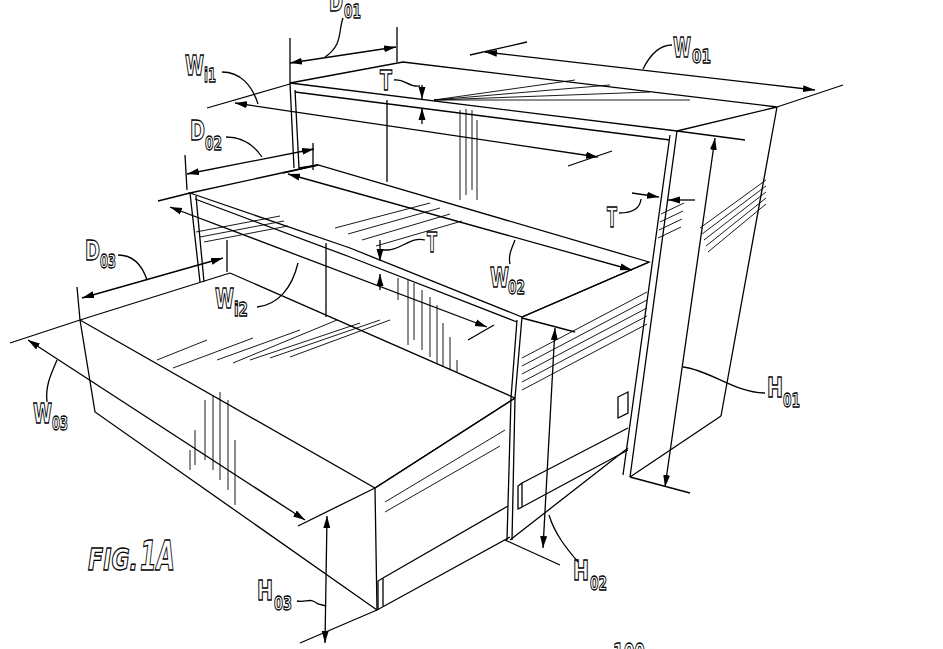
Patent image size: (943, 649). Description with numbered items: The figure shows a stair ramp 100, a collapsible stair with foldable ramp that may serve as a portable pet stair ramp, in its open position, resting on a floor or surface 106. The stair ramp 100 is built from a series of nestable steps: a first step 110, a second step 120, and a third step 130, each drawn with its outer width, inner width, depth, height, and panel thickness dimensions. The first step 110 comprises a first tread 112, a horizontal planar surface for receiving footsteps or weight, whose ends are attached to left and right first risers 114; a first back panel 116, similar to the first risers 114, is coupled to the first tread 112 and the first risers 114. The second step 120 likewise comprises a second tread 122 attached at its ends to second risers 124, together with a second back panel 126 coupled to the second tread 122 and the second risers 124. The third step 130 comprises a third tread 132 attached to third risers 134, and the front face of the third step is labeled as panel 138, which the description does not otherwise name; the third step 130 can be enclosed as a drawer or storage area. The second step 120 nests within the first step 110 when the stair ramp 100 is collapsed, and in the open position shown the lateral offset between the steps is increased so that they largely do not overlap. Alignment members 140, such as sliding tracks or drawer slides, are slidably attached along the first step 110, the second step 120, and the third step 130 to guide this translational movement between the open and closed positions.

The stair ramp 100 is at (115, 87).
The first step 110 is at (740, 239).
The first tread 112 is at (621, 117).
The first risers 114 is at (374, 164).
The first back panel 116 is at (549, 196).
The floor or surface 106 is at (754, 469).
The second step 120 is at (592, 430).
The second tread 122 is at (318, 221).
The second risers 124 is at (629, 331).
The second back panel 126 is at (367, 316).
The third step 130 is at (408, 543).
The third tread 132 is at (328, 401).
The third risers 134 is at (458, 529).
The bottom tier front face 138 is at (172, 401).
The alignment members 140 is at (452, 556).